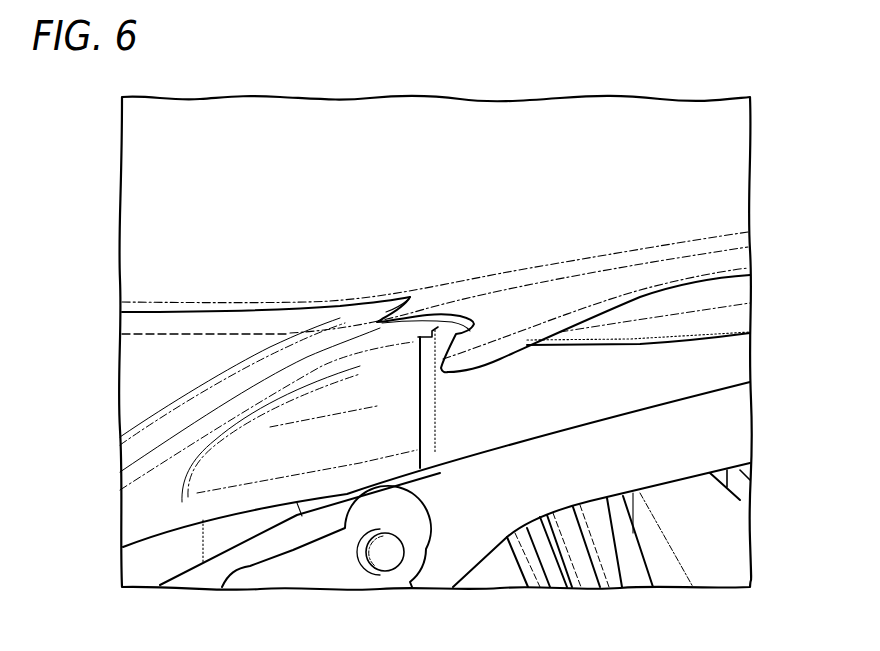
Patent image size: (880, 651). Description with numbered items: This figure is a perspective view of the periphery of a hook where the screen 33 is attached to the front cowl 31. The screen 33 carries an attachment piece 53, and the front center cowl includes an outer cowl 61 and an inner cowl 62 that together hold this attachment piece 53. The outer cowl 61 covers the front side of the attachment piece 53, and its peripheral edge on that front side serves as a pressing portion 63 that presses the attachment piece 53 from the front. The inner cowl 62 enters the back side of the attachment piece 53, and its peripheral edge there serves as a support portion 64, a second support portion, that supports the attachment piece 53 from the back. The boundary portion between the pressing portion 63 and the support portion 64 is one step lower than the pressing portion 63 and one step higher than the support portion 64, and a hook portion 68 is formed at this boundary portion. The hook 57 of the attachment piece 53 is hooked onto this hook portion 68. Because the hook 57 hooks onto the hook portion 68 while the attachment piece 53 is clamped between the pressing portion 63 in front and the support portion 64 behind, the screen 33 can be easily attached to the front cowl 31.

The front cowl 31 is at (113, 498).
The screen 33 is at (317, 120).
The attachment piece 53 is at (709, 262).
The hook 57 is at (536, 295).
The outer cowl 61 is at (135, 395).
The inner cowl 62 is at (732, 352).
The pressing portion 63 is at (150, 317).
The support portion 64 is at (713, 290).
The hook portion 68 is at (425, 315).